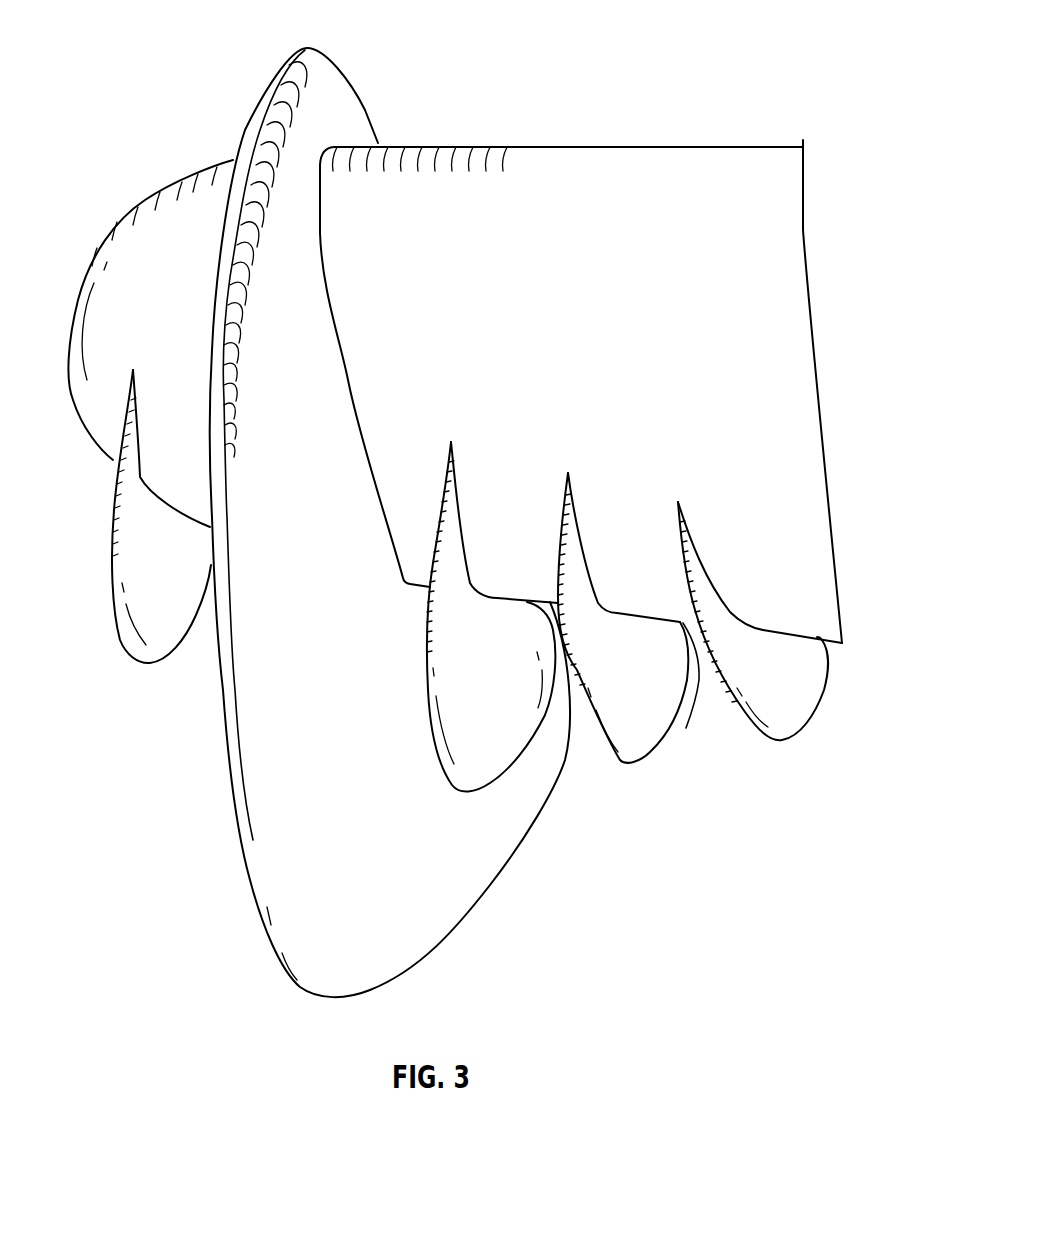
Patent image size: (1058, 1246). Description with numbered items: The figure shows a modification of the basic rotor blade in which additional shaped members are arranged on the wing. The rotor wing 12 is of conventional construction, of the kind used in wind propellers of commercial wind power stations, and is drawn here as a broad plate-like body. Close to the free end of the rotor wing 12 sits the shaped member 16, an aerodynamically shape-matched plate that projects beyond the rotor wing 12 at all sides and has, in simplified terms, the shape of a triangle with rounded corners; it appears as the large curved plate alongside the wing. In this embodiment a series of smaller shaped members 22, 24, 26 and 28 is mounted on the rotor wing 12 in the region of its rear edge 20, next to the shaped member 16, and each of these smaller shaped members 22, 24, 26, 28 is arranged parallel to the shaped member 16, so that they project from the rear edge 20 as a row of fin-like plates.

The rotor wing 12 is at (633, 168).
The shaped member 16 is at (453, 906).
The rear edge 20 is at (688, 703).
The smaller shaped member 22 is at (792, 719).
The smaller shaped member 24 is at (648, 623).
The smaller shaped member 26 is at (500, 757).
The smaller shaped member 28 is at (147, 633).